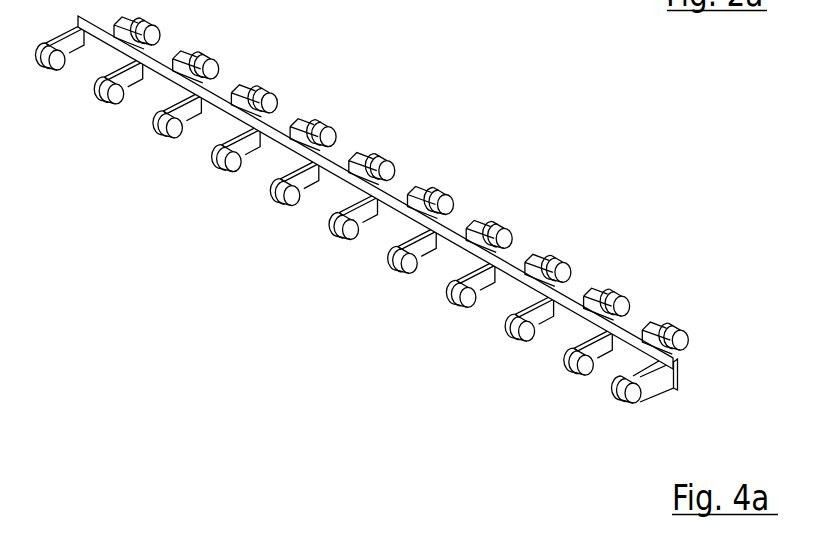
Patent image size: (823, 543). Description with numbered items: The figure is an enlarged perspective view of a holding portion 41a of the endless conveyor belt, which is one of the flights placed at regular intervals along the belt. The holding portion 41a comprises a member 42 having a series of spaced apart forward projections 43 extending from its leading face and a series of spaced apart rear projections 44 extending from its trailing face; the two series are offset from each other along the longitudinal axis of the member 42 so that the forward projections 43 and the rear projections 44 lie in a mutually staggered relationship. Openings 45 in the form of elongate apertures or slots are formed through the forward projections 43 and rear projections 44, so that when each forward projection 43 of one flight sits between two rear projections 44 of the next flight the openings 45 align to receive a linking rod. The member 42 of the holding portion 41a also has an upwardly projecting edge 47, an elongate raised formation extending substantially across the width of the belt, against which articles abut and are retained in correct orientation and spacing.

The holding portion 41a is at (561, 171).
The member 42 is at (492, 312).
The forward projections 43 is at (208, 57).
The rear projections 44 is at (208, 153).
The openings 45 is at (356, 243).
The upwardly projecting edge 47 is at (632, 340).